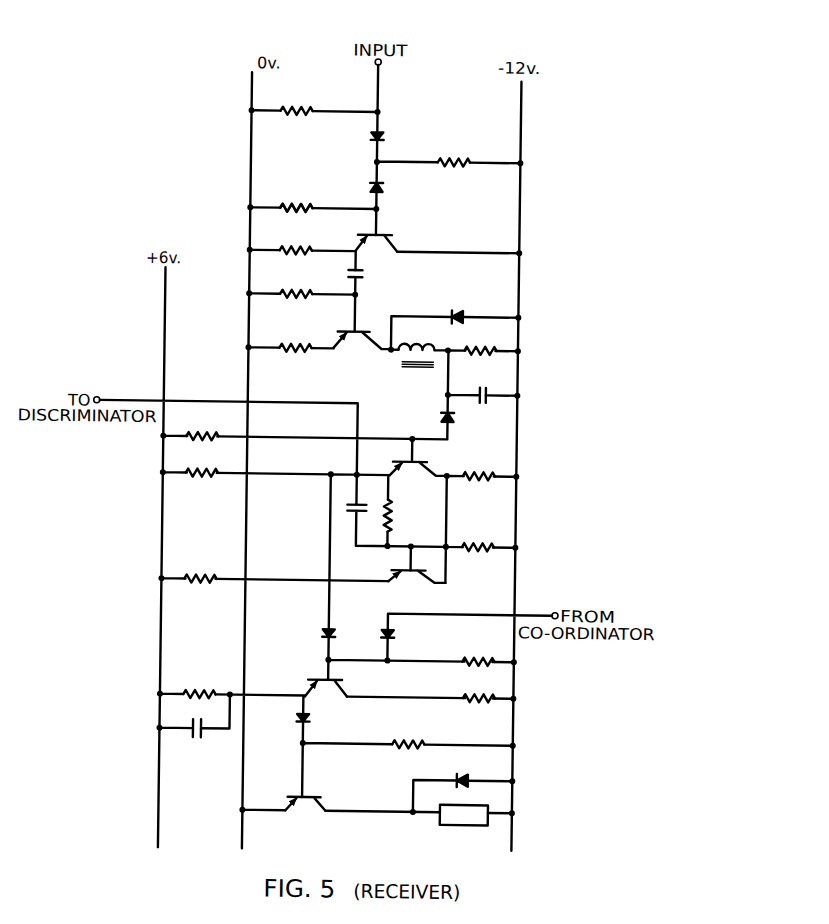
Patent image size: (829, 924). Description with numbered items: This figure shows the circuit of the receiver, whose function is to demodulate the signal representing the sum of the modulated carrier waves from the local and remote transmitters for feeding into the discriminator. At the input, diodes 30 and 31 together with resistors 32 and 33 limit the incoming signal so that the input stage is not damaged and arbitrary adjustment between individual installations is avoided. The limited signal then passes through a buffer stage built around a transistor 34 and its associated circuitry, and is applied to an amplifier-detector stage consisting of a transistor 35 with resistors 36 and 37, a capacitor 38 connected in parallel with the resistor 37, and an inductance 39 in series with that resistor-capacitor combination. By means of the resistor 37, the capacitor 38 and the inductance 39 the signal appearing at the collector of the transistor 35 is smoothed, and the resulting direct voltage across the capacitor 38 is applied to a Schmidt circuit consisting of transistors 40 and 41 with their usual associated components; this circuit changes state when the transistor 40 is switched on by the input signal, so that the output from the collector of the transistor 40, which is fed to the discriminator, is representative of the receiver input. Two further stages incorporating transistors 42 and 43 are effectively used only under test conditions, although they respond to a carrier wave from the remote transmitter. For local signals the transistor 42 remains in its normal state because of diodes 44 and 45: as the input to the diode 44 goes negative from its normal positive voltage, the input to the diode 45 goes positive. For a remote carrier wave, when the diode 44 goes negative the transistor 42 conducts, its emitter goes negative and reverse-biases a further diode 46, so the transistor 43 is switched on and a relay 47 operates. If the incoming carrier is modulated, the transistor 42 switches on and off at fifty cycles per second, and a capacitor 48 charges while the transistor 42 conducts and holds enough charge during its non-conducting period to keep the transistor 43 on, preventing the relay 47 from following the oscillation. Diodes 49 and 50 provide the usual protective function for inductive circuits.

The diode 30 is at (386, 138).
The diode 31 is at (381, 187).
The resistor 32 is at (453, 176).
The resistor 33 is at (296, 195).
The transistor 34 is at (365, 262).
The transistor 35 is at (344, 358).
The resistor 36 is at (295, 360).
The resistor 37 is at (483, 363).
The capacitor 38 is at (487, 402).
The inductance 39 is at (410, 384).
The transistor 40 is at (403, 491).
The transistor 41 is at (403, 592).
The transistor 42 is at (320, 707).
The transistor 43 is at (299, 822).
The diode 44 is at (337, 637).
The diode 45 is at (397, 637).
The diode 46 is at (300, 720).
The relay 47 is at (468, 824).
The capacitor 48 is at (203, 737).
The diode 49 is at (462, 313).
The diode 50 is at (473, 776).